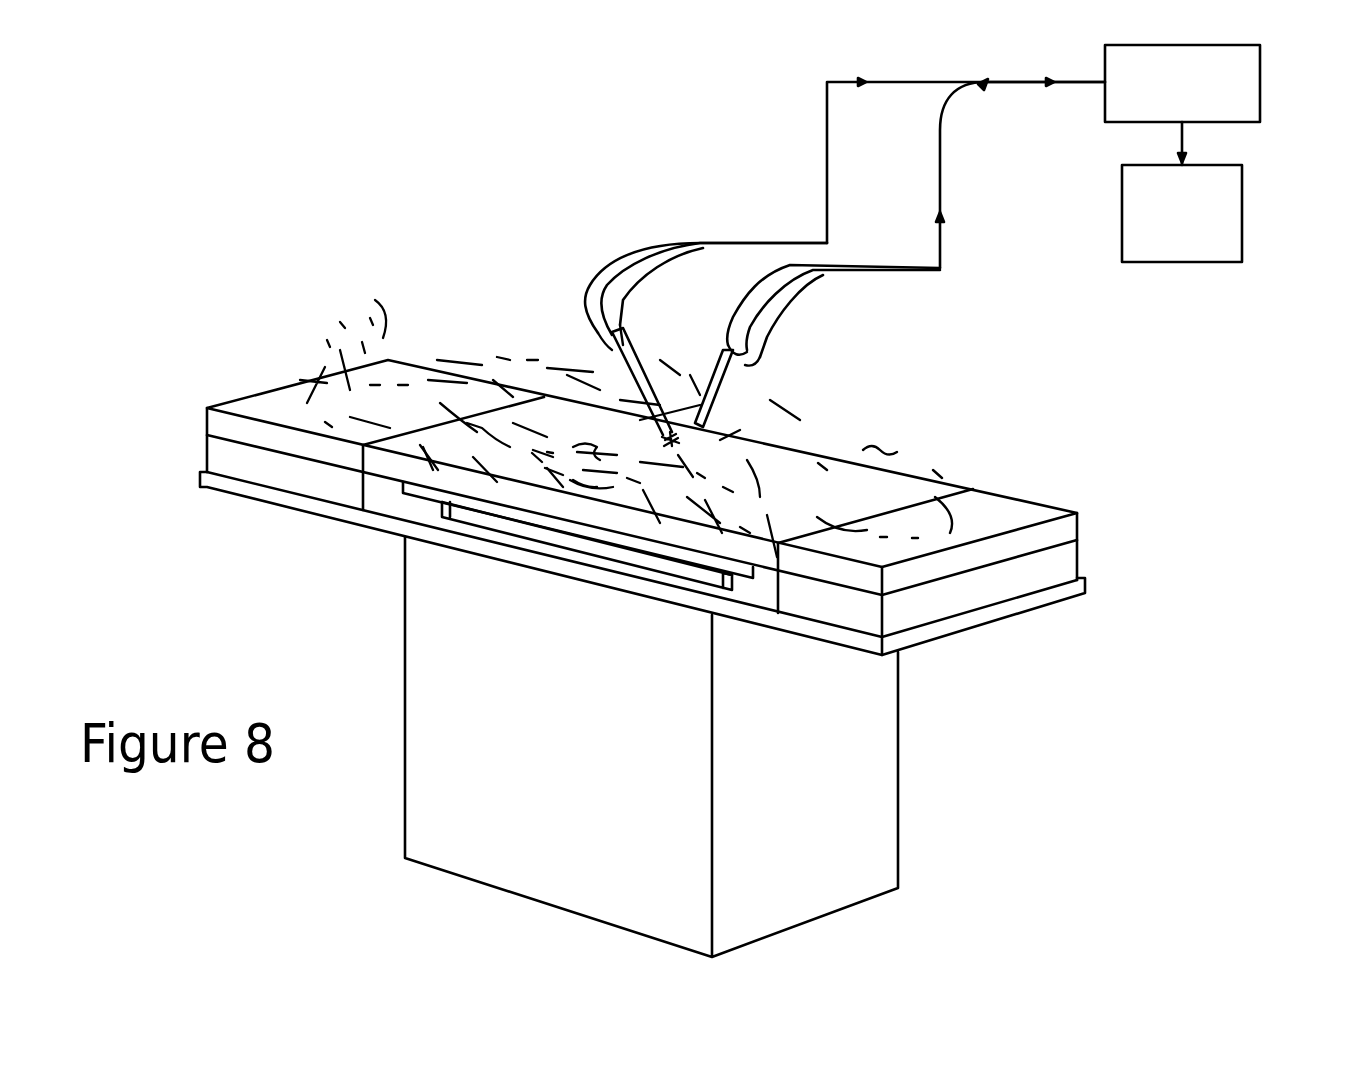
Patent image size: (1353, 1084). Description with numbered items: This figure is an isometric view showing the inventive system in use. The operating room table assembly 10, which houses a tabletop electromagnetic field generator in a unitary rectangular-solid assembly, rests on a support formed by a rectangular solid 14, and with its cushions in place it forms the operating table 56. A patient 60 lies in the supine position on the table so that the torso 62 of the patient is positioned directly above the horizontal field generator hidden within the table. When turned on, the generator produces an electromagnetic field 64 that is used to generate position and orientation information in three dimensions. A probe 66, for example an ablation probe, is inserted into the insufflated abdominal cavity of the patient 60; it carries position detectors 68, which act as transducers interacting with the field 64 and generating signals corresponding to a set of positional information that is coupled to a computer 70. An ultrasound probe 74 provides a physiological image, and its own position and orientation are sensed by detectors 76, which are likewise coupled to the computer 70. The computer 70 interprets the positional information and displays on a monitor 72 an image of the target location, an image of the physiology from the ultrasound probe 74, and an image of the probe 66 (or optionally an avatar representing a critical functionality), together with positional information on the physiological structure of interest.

The operating room table assembly 10 is at (982, 717).
The rectangular solid 14 is at (852, 640).
The operating table 56 is at (1065, 458).
The patient 60 is at (916, 458).
The torso 62 is at (757, 413).
The electromagnetic field 64 is at (769, 542).
The probe 66 is at (635, 345).
The position detectors 68 is at (610, 345).
The computer 70 is at (1255, 100).
The monitor 72 is at (1236, 242).
The ultrasound probe 74 is at (758, 400).
The detectors 76 is at (740, 378).